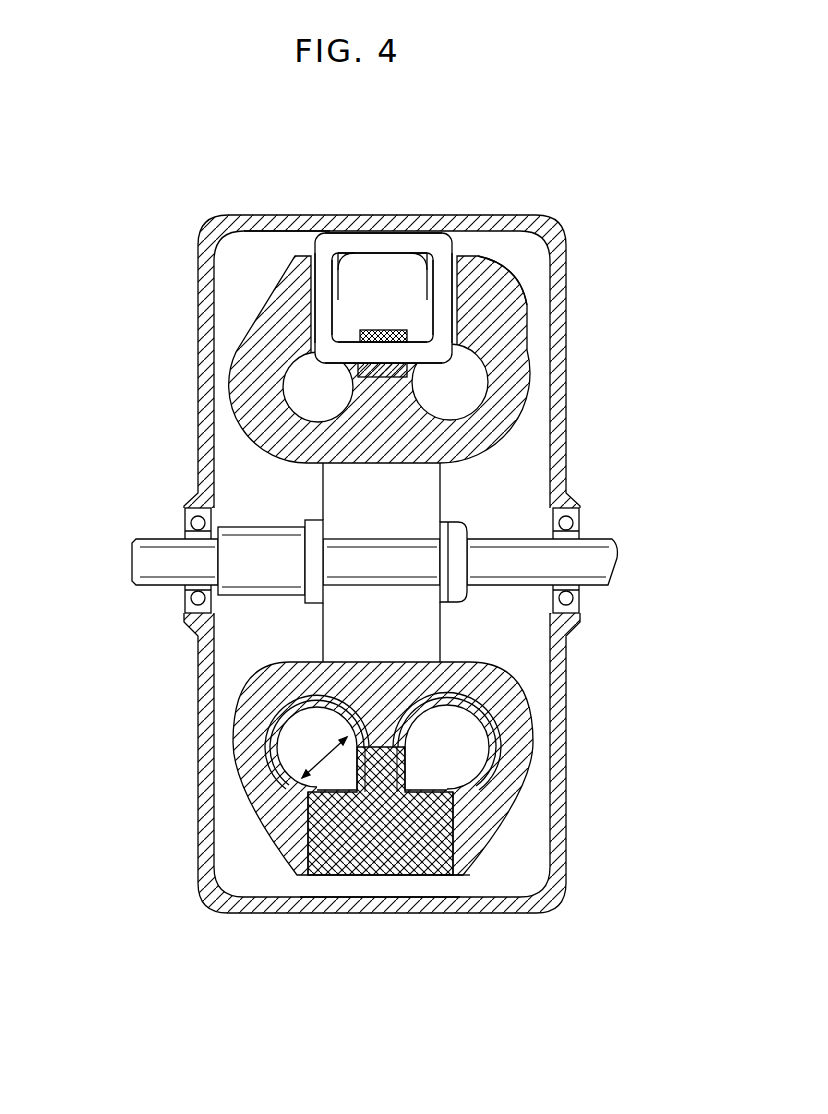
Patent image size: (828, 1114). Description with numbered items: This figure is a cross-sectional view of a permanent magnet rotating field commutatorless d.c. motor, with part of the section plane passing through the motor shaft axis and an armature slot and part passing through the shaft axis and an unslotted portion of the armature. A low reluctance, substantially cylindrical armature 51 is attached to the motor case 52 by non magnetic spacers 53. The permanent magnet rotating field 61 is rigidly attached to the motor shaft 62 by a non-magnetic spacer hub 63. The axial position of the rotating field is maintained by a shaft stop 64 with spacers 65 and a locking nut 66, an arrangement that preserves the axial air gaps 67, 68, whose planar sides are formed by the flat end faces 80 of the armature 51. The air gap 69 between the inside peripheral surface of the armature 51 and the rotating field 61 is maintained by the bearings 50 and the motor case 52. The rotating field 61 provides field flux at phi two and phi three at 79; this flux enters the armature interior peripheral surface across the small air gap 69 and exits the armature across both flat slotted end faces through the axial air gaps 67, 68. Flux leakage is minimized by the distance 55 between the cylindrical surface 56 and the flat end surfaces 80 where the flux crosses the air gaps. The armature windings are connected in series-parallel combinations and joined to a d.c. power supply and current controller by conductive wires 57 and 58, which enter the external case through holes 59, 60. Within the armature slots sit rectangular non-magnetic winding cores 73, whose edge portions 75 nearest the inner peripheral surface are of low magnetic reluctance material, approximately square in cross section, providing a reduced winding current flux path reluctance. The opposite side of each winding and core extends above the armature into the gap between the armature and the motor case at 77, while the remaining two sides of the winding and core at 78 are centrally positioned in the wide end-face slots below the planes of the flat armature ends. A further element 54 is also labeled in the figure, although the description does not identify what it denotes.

The bearings 50 is at (188, 502).
The armature 51 is at (425, 833).
The motor case 52 is at (240, 214).
The non magnetic spacers 53 is at (387, 892).
The frame bottom bar 54 is at (345, 360).
The distance 55 is at (302, 778).
The cylindrical surface 56 is at (360, 386).
The conductive wire 57 is at (325, 250).
The conductive wire 58 is at (446, 250).
The hole 59 is at (452, 250).
The hole 60 is at (318, 250).
The permanent magnet rotating field 61 is at (470, 258).
The motor shaft 62 is at (618, 546).
The non-magnetic spacer hub 63 is at (443, 480).
The shaft stop 64 is at (308, 603).
The spacers 65 is at (323, 622).
The locking nut 66 is at (466, 526).
The axial air gap 67 is at (308, 877).
The axial air gap 68 is at (452, 875).
The air gap 69 is at (405, 378).
The winding cores 73 is at (360, 302).
The edge portions 75 is at (407, 332).
The gap between armature and motor case 77 is at (302, 243).
The remaining two sides of winding and core 78 is at (444, 287).
The field flux location 79 is at (470, 688).
The flat end faces 80 is at (455, 843).